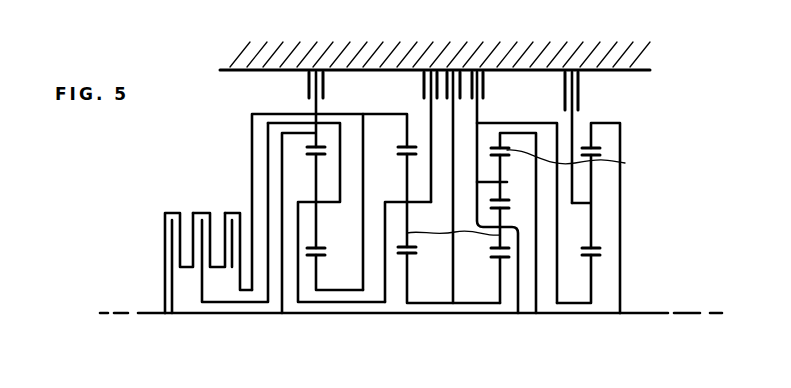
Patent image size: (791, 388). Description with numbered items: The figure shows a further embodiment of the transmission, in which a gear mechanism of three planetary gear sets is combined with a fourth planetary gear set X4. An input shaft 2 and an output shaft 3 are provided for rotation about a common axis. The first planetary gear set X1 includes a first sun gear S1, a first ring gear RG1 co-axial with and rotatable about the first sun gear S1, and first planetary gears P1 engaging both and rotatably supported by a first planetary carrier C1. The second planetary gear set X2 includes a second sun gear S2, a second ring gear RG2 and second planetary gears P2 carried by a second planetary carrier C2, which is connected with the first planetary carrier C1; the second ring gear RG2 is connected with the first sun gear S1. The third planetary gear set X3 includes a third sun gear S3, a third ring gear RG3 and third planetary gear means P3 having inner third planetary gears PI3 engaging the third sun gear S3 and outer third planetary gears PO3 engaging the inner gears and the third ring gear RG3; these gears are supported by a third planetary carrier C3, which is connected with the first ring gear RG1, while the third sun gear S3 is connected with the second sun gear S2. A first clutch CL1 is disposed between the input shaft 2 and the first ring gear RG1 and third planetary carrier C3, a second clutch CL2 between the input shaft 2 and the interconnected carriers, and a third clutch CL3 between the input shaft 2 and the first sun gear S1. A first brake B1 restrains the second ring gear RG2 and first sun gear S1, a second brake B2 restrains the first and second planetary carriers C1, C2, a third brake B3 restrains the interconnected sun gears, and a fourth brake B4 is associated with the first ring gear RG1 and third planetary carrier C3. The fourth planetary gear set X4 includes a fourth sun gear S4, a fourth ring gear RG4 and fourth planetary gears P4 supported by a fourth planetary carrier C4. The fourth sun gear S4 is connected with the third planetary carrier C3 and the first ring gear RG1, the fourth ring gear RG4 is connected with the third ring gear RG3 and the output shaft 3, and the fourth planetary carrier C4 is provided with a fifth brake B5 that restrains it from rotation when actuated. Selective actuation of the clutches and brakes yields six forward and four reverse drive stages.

The first brake B1 is at (310, 80).
The second brake B2 is at (423, 80).
The third brake B3 is at (445, 80).
The fourth brake B4 is at (483, 80).
The fifth brake B5 is at (579, 93).
The first ring gear RG1 is at (303, 137).
The second ring gear RG2 is at (404, 134).
The third ring gear RG3 is at (504, 140).
The fourth ring gear RG4 is at (596, 135).
The first clutch CL1 is at (171, 218).
The second clutch CL2 is at (202, 218).
The third clutch CL3 is at (232, 218).
The first planetary carrier C1 is at (314, 210).
The second planetary carrier C2 is at (400, 201).
The third planetary carrier C3 is at (508, 226).
The fourth planetary carrier C4 is at (594, 205).
The first planetary gears P1 is at (316, 236).
The second planetary gears P2 is at (415, 248).
The third planetary gear means P3 is at (522, 186).
The fourth planetary gears P4 is at (594, 237).
The outer third planetary gears PO3 is at (582, 163).
The inner third planetary gears PI3 is at (453, 225).
The first sun gear S1 is at (318, 273).
The second sun gear S2 is at (407, 280).
The third sun gear S3 is at (500, 274).
The fourth sun gear S4 is at (592, 265).
The first planetary gear set X1 is at (313, 284).
The second planetary gear set X2 is at (401, 291).
The third planetary gear set X3 is at (509, 288).
The fourth planetary gear set X4 is at (602, 288).
The input shaft 2 is at (156, 317).
The output shaft 3 is at (660, 317).